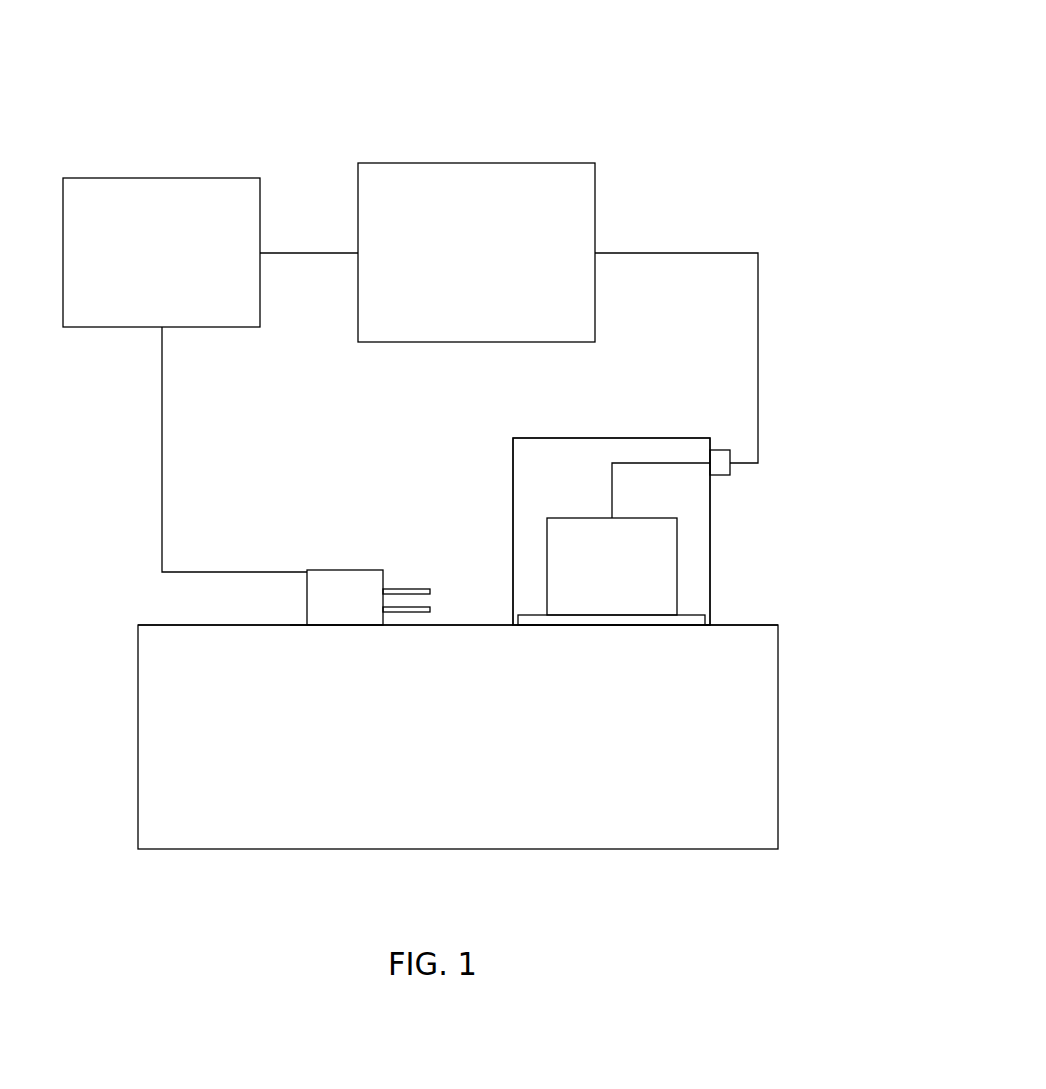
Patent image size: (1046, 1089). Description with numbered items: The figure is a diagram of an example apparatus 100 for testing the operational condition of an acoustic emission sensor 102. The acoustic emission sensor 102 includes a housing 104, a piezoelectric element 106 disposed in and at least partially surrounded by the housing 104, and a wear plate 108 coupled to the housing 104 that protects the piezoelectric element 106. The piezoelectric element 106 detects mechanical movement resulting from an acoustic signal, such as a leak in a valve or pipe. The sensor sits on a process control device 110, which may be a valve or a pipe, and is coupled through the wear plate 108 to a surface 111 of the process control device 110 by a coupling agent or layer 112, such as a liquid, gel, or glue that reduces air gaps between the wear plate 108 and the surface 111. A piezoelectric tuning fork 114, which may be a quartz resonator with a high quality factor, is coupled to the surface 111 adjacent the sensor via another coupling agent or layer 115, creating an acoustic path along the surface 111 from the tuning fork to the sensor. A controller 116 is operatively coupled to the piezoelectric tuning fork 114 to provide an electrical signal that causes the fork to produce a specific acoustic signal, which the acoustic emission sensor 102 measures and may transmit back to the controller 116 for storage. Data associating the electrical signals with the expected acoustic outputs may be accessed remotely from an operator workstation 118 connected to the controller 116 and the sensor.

The apparatus 100 is at (676, 70).
The acoustic emission sensor 102 is at (604, 421).
The housing 104 is at (513, 457).
The piezoelectric element 106 is at (547, 537).
The wear plate 108 is at (523, 615).
The process control device 110 is at (778, 680).
The surface 111 is at (213, 625).
The coupling agent or layer 112 is at (718, 623).
The piezoelectric tuning fork 114 is at (355, 570).
The coupling agent or layer 115 is at (302, 623).
The controller 116 is at (120, 178).
The operator workstation 118 is at (397, 165).